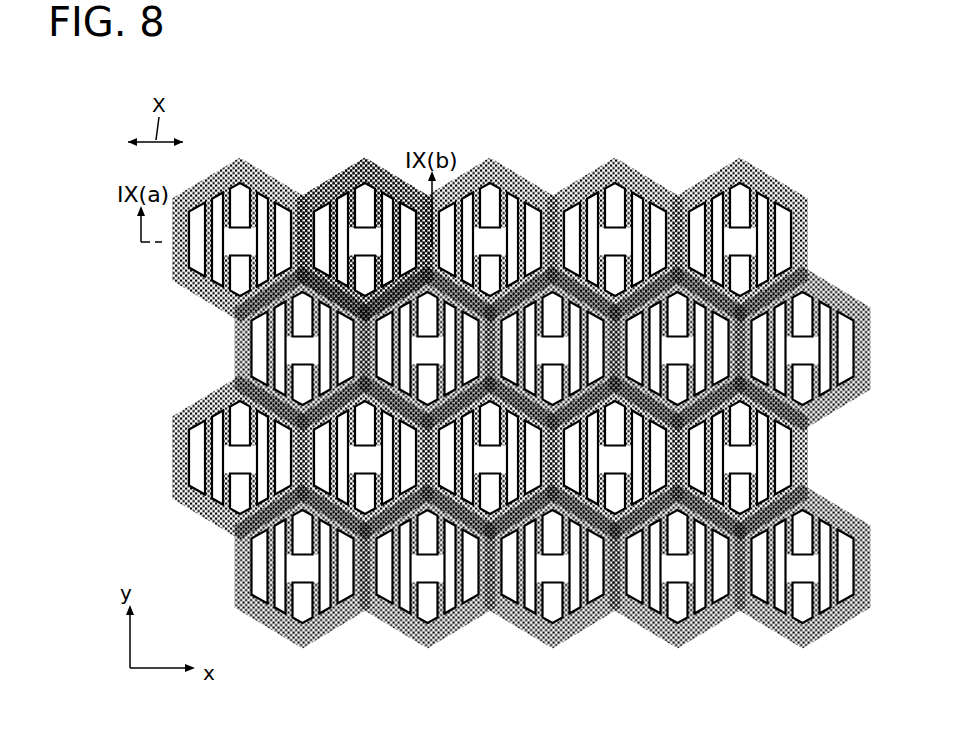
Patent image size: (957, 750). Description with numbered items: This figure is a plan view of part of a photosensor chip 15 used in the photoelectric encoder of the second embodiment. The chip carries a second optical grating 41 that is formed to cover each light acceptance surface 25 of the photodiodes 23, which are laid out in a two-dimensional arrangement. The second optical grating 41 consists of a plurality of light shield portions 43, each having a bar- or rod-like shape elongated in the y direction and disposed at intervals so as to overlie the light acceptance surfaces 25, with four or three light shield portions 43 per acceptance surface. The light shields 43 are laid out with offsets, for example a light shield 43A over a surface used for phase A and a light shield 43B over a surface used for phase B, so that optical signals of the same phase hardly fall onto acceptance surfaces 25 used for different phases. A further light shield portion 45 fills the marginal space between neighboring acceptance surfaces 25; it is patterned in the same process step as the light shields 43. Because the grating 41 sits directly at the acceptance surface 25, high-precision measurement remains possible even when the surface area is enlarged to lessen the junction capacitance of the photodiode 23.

The photosensor chip 15 is at (469, 372).
The second optical grating 41 is at (523, 183).
The light shield portion 45 is at (298, 215).
The light shield portion 43 is at (209, 203).
The light shield 43A is at (186, 211).
The light shield 43B is at (250, 338).
The photodiode 23 is at (246, 202).
The light acceptance surface 25 is at (290, 212).